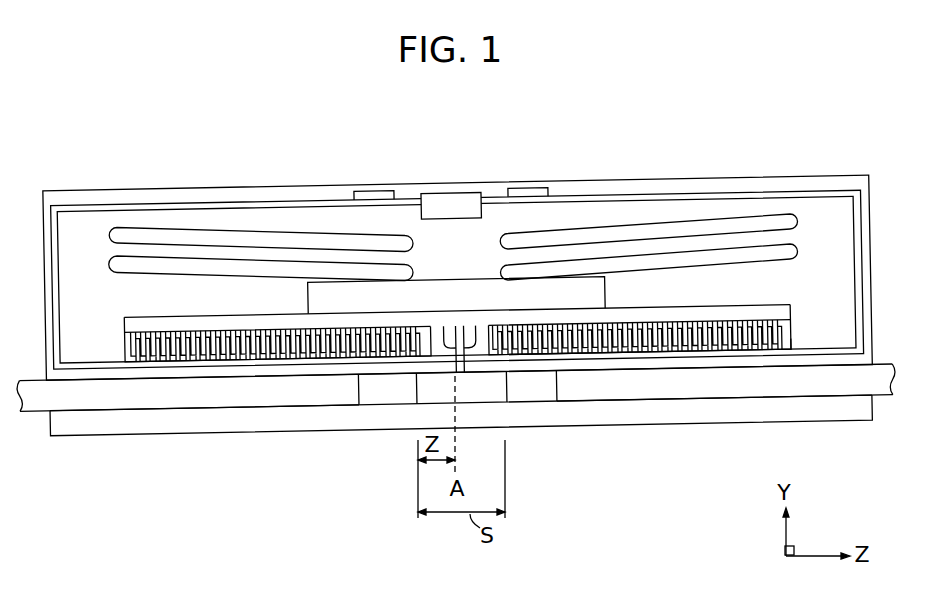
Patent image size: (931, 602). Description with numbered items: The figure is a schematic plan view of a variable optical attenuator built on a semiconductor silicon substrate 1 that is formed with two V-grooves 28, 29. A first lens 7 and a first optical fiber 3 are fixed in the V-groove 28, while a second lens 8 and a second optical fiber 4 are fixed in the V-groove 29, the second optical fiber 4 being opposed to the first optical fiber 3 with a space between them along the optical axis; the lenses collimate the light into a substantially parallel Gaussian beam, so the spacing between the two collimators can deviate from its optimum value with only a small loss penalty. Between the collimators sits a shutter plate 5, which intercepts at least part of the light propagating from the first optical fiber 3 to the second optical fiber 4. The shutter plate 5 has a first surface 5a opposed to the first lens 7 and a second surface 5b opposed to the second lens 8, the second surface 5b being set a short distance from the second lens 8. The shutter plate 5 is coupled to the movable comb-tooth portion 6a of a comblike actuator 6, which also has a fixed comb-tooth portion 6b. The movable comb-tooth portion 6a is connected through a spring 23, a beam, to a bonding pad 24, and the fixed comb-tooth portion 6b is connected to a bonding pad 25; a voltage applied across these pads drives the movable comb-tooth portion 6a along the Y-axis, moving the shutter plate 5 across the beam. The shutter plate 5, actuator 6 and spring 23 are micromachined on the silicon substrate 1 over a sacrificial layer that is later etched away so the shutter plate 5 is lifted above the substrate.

The silicon substrate 1 is at (722, 179).
The first optical fiber 3 is at (641, 412).
The second optical fiber 4 is at (222, 400).
The shutter plate 5 is at (458, 333).
The first surface 5a is at (474, 330).
The second surface 5b is at (444, 330).
The comblike actuator 6 is at (797, 308).
The movable comb-tooth portion 6a is at (783, 303).
The fixed comb-tooth portion 6b is at (790, 340).
The first lens 7 is at (540, 393).
The second lens 8 is at (380, 393).
The spring 23 is at (223, 226).
The bonding pad 24 is at (456, 205).
The bonding pad 25 is at (385, 196).
The V-groove 28 is at (748, 388).
The V-groove 29 is at (143, 398).